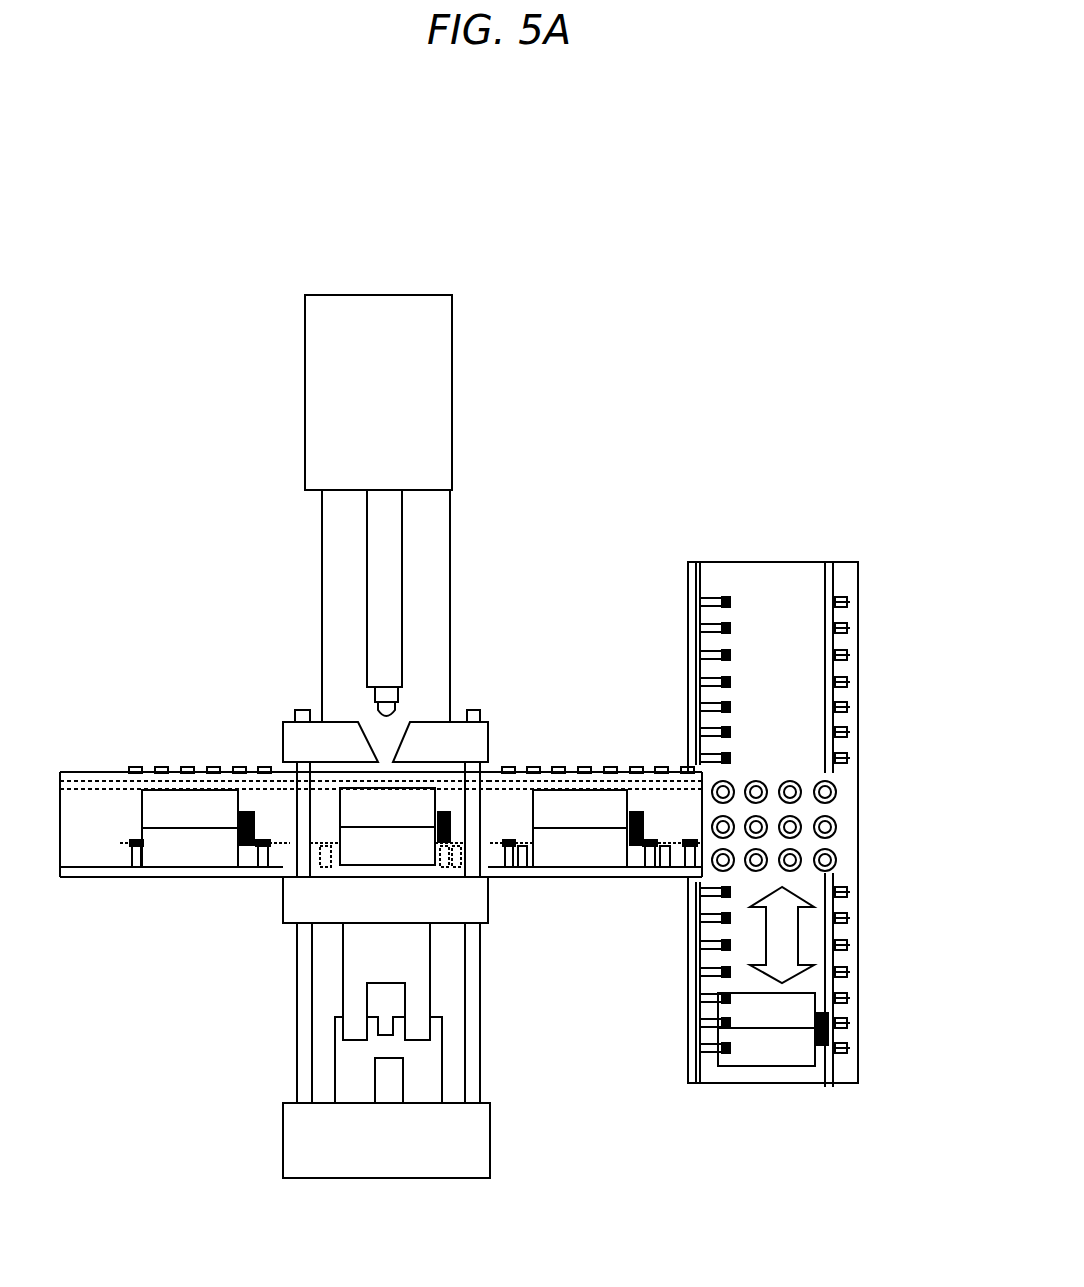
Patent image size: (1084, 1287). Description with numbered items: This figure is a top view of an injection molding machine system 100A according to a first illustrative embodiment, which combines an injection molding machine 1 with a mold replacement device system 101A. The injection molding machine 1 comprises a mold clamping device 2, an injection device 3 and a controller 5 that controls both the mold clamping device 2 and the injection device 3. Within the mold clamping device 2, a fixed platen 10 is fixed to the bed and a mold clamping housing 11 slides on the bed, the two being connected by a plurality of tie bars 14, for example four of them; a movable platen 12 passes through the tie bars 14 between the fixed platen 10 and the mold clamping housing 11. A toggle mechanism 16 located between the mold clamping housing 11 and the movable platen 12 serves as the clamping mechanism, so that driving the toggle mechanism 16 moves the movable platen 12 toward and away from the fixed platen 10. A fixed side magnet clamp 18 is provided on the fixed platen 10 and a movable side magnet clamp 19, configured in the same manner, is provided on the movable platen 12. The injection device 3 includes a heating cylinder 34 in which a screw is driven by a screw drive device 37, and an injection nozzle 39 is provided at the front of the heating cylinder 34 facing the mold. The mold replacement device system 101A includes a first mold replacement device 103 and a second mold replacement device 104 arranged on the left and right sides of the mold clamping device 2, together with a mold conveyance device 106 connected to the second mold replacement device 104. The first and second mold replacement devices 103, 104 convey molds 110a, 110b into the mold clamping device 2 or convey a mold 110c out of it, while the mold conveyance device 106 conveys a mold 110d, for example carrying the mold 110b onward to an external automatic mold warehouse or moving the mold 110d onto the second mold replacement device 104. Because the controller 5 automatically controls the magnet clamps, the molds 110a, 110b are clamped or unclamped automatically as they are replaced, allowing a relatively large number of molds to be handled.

The injection molding machine system 100A is at (797, 178).
The injection molding machine 1 is at (571, 305).
The mold clamping device 2 is at (542, 615).
The injection device 3 is at (487, 373).
The controller 5 is at (216, 688).
The fixed platen 10 is at (283, 718).
The mold clamping housing 11 is at (490, 1158).
The movable platen 12 is at (483, 923).
The tie bars 14 is at (297, 1048).
The toggle mechanism 16 is at (462, 1040).
The fixed side magnet clamp 18 is at (283, 768).
The movable side magnet clamp 19 is at (282, 877).
The heating cylinder 34 is at (367, 527).
The screw drive device 37 is at (303, 373).
The injection nozzle 39 is at (397, 710).
The mold replacement device system 101A is at (853, 435).
The first mold replacement device 103 is at (113, 772).
The second mold replacement device 104 is at (578, 772).
The mold conveyance device 106 is at (765, 562).
The mold 110a is at (178, 847).
The mold 110b is at (580, 850).
The mold 110c is at (403, 793).
The mold 110d is at (760, 1066).